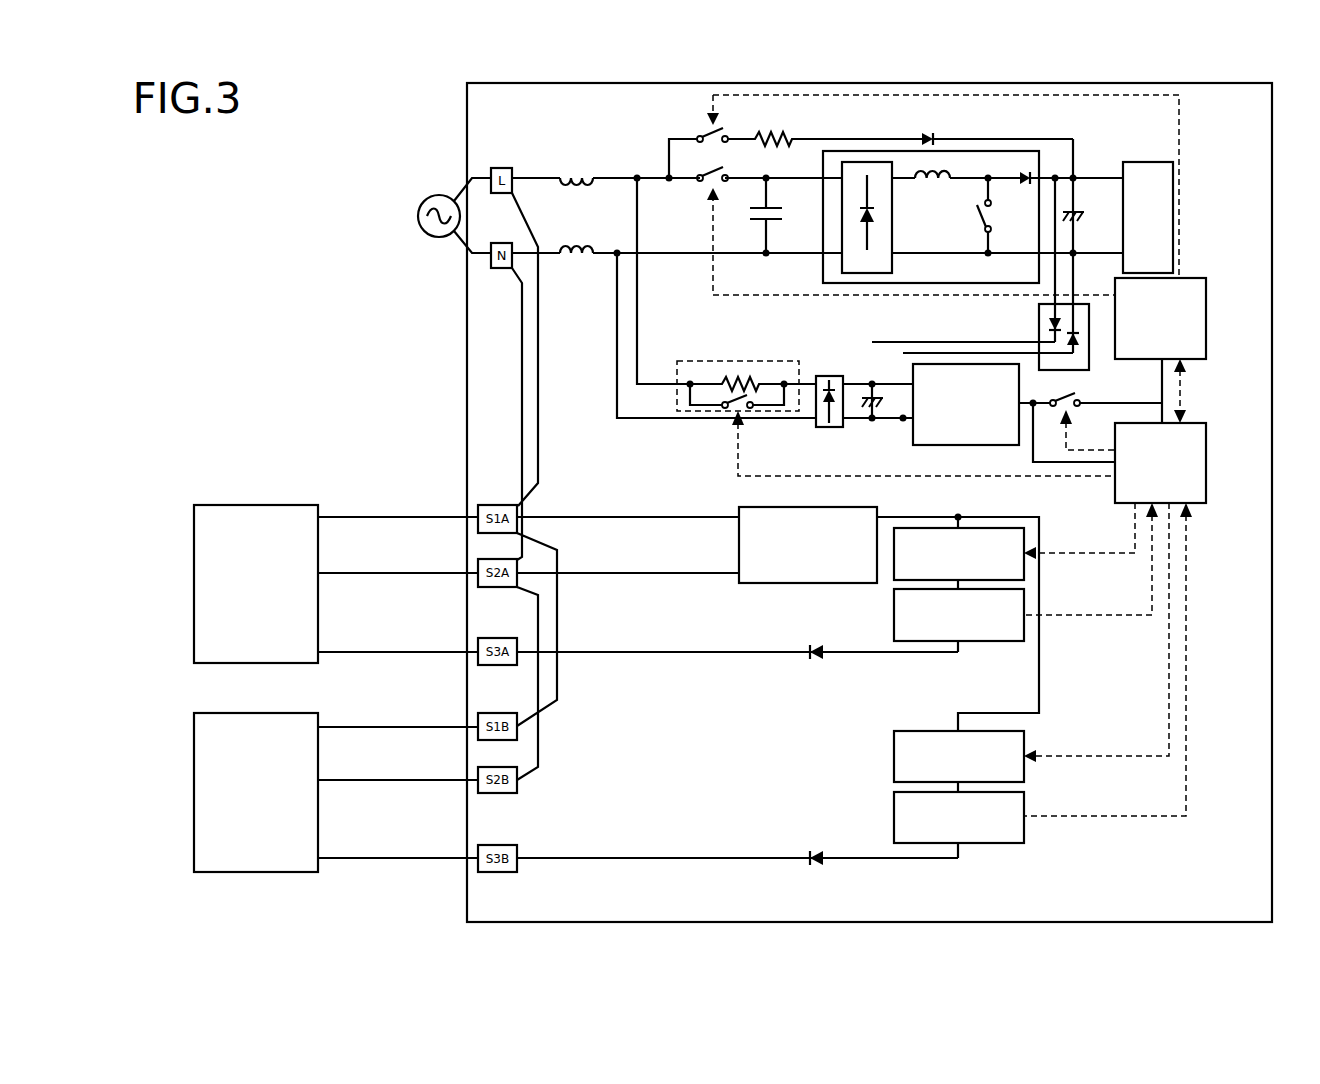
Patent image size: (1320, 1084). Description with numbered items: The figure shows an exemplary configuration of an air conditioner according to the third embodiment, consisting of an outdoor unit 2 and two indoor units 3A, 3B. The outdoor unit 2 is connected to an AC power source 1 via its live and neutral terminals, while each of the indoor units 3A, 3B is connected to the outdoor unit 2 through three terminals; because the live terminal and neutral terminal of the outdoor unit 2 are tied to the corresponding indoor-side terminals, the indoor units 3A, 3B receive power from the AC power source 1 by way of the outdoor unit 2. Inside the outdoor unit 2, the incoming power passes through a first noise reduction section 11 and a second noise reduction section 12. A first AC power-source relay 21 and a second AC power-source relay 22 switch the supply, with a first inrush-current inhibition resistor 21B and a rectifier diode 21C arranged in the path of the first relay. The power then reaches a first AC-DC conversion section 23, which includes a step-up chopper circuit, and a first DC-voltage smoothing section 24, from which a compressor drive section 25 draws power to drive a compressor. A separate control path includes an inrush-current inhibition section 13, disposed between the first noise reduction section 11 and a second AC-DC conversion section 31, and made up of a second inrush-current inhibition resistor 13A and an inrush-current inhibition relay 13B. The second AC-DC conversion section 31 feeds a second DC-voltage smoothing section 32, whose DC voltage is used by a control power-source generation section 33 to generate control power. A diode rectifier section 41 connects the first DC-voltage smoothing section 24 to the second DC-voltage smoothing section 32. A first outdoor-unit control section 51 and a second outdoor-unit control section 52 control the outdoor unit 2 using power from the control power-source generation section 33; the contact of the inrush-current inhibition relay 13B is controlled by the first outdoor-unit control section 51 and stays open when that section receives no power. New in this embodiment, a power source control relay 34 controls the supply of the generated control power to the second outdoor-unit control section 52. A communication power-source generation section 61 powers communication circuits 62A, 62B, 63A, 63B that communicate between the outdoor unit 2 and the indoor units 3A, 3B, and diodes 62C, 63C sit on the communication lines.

The AC power source 1 is at (420, 205).
The outdoor unit 2 is at (467, 128).
The indoor unit 3A is at (194, 542).
The indoor unit 3B is at (194, 740).
The first noise reduction section 11 is at (575, 172).
The second noise reduction section 12 is at (782, 221).
The inrush-current inhibition section 13 is at (677, 399).
The second inrush-current inhibition resistor 13A is at (722, 380).
The inrush-current inhibition relay 13B is at (747, 410).
The first AC power-source relay 21 is at (698, 136).
The first inrush-current inhibition resistor 21B is at (795, 137).
The rectifier diode 21C is at (935, 133).
The second AC power-source relay 22 is at (700, 184).
The first AC-DC conversion section 23 is at (880, 283).
The first DC-voltage smoothing section 24 is at (1080, 210).
The compressor drive section 25 is at (1173, 185).
The second AC-DC conversion section 31 is at (829, 376).
The second DC-voltage smoothing section 32 is at (872, 410).
The control power-source generation section 33 is at (1019, 383).
The power source control relay 34 is at (1077, 408).
The diode rectifier section 41 is at (1039, 322).
The first outdoor-unit control section 51 is at (1206, 503).
The second outdoor-unit control section 52 is at (1206, 355).
The communication power-source generation section 61 is at (832, 583).
The communication circuit 62A is at (1024, 540).
The communication circuit 62B is at (1024, 601).
The diode 62C is at (818, 655).
The communication circuit 63A is at (1024, 743).
The communication circuit 63B is at (1024, 804).
The diode 63C is at (818, 861).